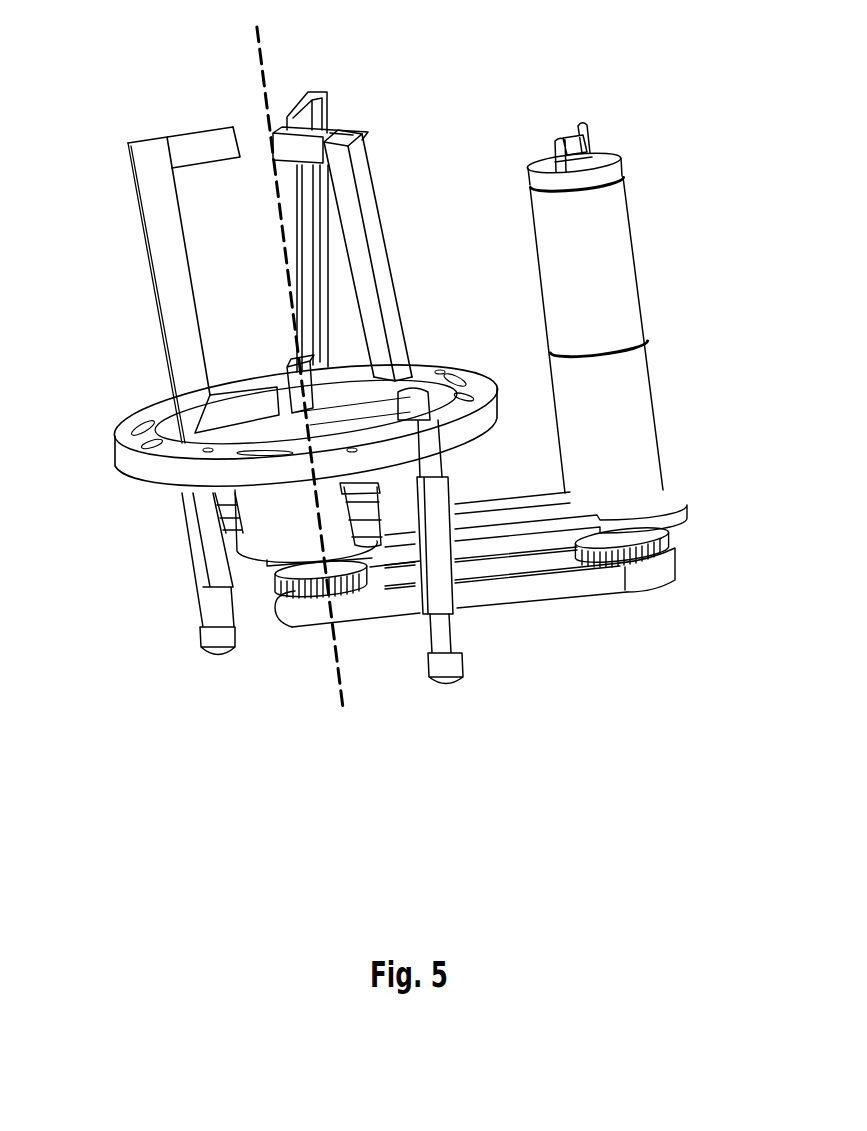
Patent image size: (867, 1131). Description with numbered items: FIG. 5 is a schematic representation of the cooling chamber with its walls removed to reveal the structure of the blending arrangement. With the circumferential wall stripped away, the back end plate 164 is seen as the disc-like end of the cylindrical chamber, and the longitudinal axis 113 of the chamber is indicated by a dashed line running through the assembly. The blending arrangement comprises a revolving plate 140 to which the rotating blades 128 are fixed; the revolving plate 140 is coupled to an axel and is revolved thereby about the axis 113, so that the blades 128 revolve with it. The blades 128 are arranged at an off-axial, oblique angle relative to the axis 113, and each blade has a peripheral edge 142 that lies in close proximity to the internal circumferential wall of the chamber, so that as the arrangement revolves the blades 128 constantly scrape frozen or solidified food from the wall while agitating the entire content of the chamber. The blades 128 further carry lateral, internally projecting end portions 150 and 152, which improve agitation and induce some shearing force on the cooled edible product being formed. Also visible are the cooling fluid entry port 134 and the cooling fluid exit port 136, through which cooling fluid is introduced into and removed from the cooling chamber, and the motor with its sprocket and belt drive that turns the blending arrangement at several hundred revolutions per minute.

The longitudinal axis 113 is at (257, 54).
The rotating blades 128 is at (163, 283).
The cooling fluid entry port 134 is at (212, 568).
The cooling fluid exit port 136 is at (438, 628).
The revolving plate 140 is at (258, 431).
The peripheral edge 142 is at (140, 207).
The lateral internally projecting end portion 150 is at (195, 150).
The lateral internally projecting end portion 152 is at (258, 408).
The back end plate 164 is at (147, 470).